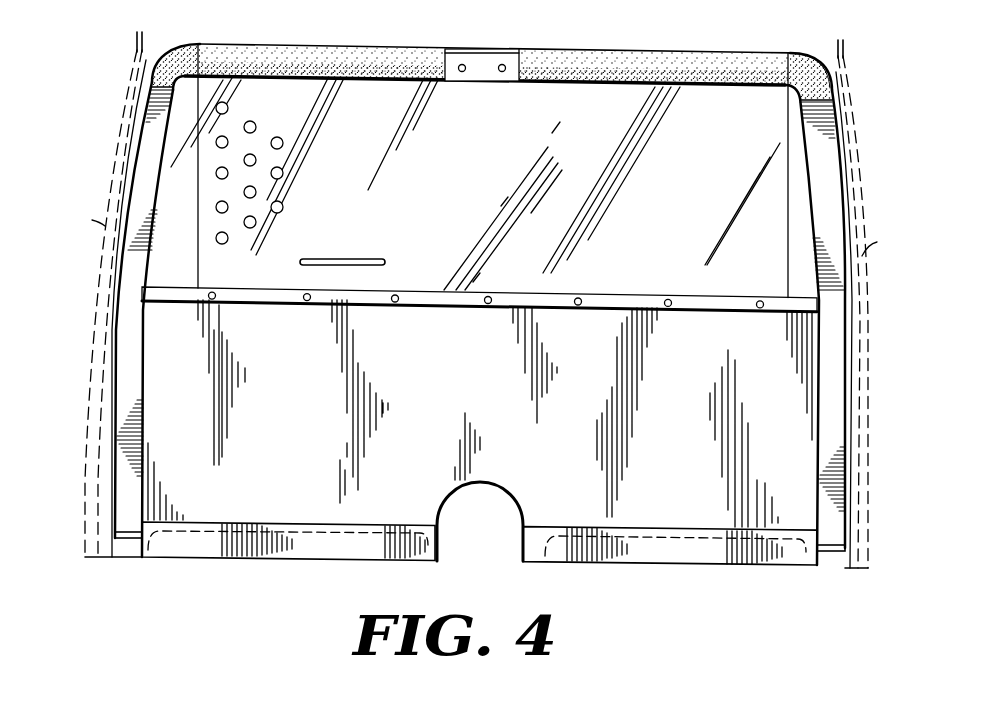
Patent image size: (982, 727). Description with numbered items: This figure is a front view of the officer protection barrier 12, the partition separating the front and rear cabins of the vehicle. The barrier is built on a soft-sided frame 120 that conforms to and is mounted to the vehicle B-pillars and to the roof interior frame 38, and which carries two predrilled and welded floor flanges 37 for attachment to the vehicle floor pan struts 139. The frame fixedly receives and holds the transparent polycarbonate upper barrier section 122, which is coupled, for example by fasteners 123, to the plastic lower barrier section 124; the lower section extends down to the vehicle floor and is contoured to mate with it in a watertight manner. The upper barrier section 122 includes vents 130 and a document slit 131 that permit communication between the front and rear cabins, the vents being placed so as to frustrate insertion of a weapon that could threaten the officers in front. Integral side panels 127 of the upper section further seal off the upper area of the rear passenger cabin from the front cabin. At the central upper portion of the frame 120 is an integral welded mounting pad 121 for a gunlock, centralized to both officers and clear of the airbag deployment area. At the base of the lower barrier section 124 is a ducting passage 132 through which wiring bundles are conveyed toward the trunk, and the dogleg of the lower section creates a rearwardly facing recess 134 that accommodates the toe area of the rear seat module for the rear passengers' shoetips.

The officer protection barrier 12 is at (638, 44).
The floor flanges 37 is at (110, 532).
The roof interior frame 38 is at (157, 50).
The soft-sided frame 120 is at (380, 60).
The mounting pad 121 is at (468, 48).
The upper barrier section 122 is at (508, 192).
The fasteners 123 is at (672, 296).
The lower barrier section 124 is at (503, 402).
The side panels 127 is at (123, 168).
The vents 130 is at (283, 157).
The document slit 131 is at (359, 245).
The ducting passage 132 is at (495, 481).
The rearwardly facing recess 134 is at (358, 522).
The floor pan struts 139 is at (333, 560).